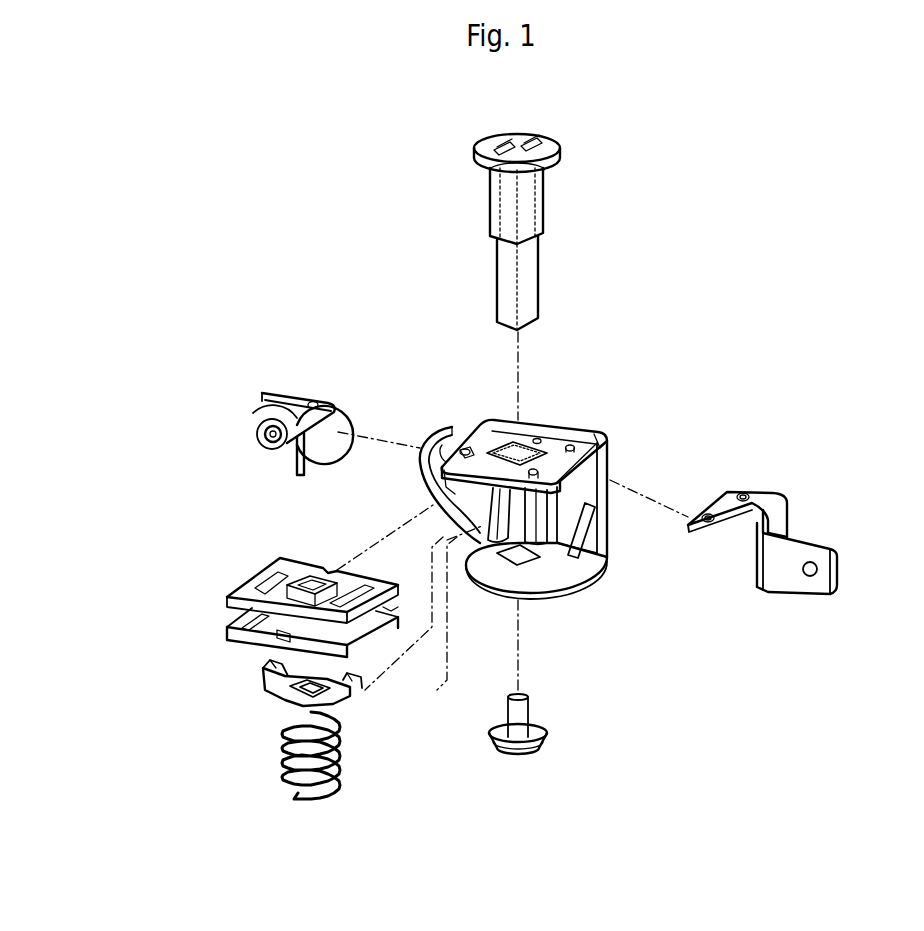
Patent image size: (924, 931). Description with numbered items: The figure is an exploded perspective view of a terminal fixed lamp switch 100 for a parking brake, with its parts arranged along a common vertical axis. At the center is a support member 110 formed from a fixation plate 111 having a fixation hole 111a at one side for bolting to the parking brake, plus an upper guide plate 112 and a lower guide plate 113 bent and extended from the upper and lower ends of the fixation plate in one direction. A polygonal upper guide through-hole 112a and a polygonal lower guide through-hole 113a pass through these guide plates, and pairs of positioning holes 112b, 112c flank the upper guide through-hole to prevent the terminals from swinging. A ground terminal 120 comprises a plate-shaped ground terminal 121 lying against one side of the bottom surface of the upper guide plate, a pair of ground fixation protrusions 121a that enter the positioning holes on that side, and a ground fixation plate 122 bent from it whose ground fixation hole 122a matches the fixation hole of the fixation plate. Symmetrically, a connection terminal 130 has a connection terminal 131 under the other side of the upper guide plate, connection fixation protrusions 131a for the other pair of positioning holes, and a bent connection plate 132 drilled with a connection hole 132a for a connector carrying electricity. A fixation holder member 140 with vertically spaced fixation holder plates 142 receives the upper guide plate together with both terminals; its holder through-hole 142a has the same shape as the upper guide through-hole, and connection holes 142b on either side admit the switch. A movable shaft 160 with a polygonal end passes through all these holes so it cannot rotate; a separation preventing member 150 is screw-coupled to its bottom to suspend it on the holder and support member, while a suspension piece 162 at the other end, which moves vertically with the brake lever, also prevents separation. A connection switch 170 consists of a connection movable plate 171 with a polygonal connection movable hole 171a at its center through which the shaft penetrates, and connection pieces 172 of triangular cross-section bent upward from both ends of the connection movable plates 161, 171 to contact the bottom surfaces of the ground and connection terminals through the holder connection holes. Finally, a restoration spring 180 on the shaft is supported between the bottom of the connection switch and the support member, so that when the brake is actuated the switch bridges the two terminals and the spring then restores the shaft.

The terminal fixed lamp switch 100 is at (679, 196).
The support member 110 is at (593, 398).
The fixation plate 111 is at (578, 488).
The fixation hole 111a is at (445, 481).
The upper guide plate 112 is at (528, 430).
The upper guide through-hole 112a is at (528, 455).
The positioning ground holes 112b is at (490, 430).
The positioning connection holes 112c is at (607, 438).
The lower guide plate 113 is at (549, 562).
The lower guide through-hole 113a is at (520, 562).
The ground terminal 120 is at (245, 368).
The ground terminal 121 is at (300, 432).
The ground fixation protrusion 121a is at (313, 402).
The ground fixation plate 122 is at (250, 430).
The ground fixation hole 122a is at (267, 437).
The connection terminal 130 is at (822, 508).
The connection terminal 131 is at (727, 528).
The connection fixation protrusion 131a is at (746, 492).
The connection plate 132 is at (787, 580).
The connection hole 132a is at (816, 571).
The fixation holder member 140 is at (218, 567).
The fixation holder plate 142 is at (307, 576).
The holder through-hole 142a is at (262, 616).
The connection holes 142b is at (245, 584).
The separation preventing member 150 is at (531, 749).
The movable shaft 160 is at (465, 182).
The connection movable plates 161 is at (542, 236).
The suspension piece 162 is at (545, 149).
The connection switch 170 is at (266, 745).
The connection movable plate 171 is at (262, 680).
The connection movable hole 171a is at (293, 700).
The connection piece 172 is at (357, 690).
The restoration spring 180 is at (338, 791).